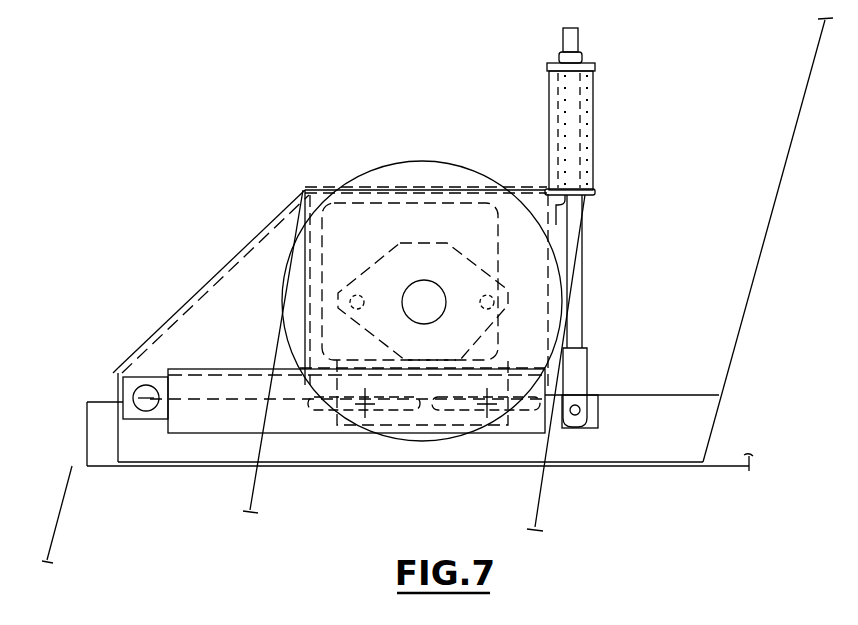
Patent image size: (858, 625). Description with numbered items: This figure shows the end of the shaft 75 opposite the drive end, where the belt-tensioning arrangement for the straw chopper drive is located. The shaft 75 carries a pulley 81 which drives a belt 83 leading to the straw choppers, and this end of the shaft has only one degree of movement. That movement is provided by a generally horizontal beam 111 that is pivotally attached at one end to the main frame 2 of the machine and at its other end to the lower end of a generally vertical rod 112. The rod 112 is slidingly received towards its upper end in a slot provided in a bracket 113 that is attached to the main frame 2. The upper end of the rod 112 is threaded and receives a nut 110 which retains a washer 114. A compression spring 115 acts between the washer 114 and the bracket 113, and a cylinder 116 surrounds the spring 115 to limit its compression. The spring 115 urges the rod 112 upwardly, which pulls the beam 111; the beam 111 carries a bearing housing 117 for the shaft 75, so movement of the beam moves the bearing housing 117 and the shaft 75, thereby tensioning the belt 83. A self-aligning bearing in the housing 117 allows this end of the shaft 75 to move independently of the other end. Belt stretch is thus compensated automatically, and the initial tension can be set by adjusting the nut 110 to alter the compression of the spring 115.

The main frame 2 is at (195, 305).
The shaft 75 is at (417, 295).
The pulley 81 is at (425, 172).
The belt 83 is at (541, 492).
The nut 110 is at (582, 59).
The beam 111 is at (588, 418).
The rod 112 is at (576, 272).
The bracket 113 is at (594, 196).
The washer 114 is at (592, 67).
The compression spring 115 is at (586, 110).
The cylinder 116 is at (594, 160).
The bearing housing 117 is at (470, 283).